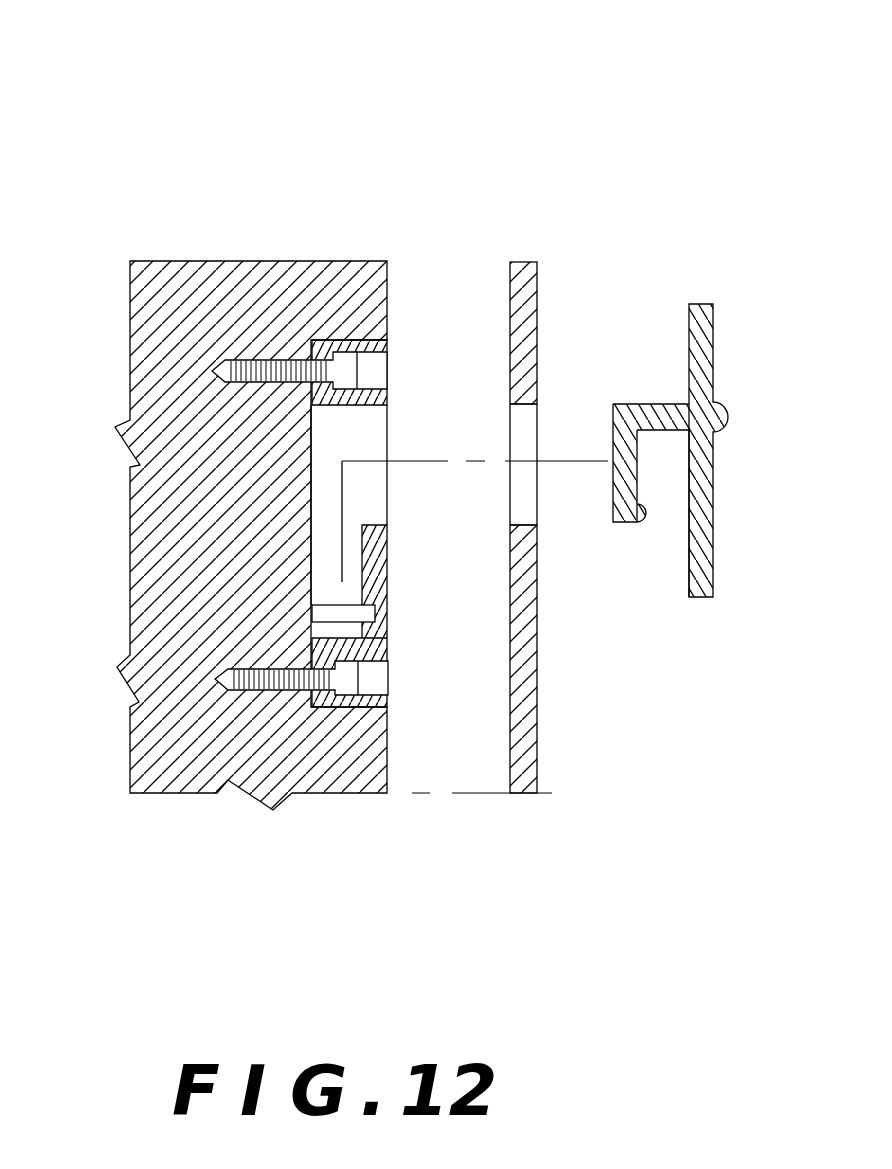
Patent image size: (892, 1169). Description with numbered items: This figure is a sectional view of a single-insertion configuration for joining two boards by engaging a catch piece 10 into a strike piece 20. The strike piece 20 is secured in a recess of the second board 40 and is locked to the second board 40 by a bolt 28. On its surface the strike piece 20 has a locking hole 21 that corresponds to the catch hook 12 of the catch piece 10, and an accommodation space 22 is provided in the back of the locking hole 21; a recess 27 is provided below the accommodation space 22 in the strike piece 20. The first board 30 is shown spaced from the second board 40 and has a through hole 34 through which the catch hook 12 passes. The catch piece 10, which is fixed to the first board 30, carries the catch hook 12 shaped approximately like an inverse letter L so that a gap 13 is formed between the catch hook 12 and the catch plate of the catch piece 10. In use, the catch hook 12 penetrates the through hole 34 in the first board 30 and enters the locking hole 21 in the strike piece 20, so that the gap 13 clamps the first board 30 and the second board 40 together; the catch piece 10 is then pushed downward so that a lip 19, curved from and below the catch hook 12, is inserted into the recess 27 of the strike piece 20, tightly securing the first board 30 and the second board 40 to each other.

The catch piece 10 is at (705, 304).
The catch hook 12 is at (615, 480).
The gap 13 is at (669, 508).
The lip 19 is at (642, 523).
The strike piece 20 is at (345, 340).
The locking hole 21 is at (375, 435).
The accommodation space 22 is at (325, 529).
The recess 27 is at (312, 622).
The bolt 28 is at (273, 683).
The first board 30 is at (523, 262).
The through hole 34 is at (527, 430).
The second board 40 is at (207, 260).